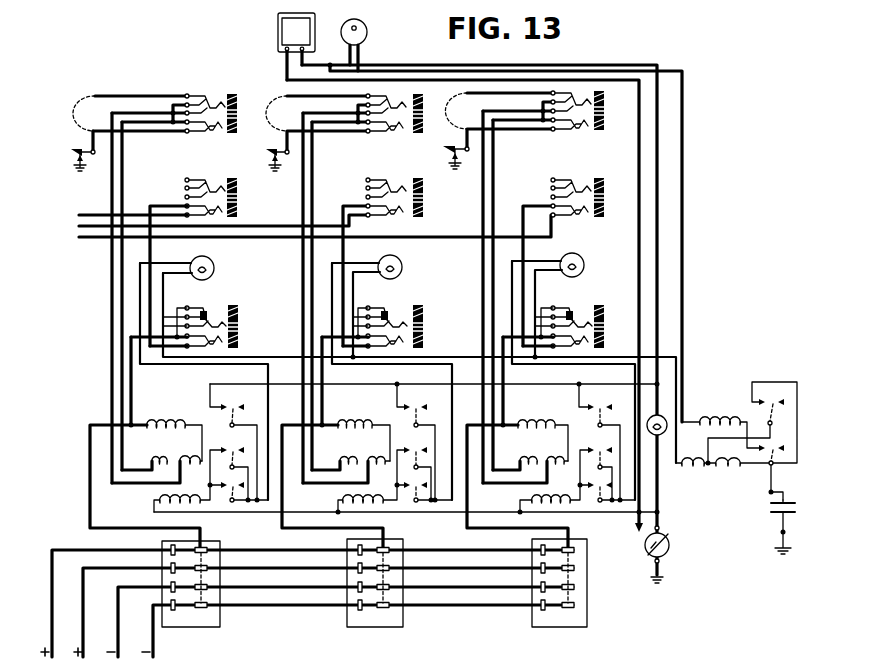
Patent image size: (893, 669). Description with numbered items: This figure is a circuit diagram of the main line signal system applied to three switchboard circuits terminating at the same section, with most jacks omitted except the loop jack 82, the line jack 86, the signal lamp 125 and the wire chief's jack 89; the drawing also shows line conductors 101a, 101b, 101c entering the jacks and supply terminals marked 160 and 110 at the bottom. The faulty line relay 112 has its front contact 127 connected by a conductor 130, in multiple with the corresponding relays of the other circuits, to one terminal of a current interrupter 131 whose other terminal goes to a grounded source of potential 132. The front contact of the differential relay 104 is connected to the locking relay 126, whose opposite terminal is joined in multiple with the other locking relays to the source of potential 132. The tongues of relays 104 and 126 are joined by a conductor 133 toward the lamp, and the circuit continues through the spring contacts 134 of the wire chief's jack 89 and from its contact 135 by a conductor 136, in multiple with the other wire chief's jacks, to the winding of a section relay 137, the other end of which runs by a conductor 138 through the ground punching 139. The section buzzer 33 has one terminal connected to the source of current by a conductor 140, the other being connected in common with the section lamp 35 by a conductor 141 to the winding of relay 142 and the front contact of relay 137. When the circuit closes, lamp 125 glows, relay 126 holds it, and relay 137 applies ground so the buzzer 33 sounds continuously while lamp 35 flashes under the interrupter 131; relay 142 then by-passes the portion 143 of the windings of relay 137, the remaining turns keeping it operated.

The section buzzer 33 is at (278, 31).
The section lamp 35 is at (367, 32).
The loop jack 82 is at (172, 107).
The line jack 86 is at (228, 197).
The wire chief's jack 89 is at (207, 318).
The line conductor 101a is at (112, 276).
The line conductor 101b is at (203, 276).
The line conductor 101c is at (295, 276).
The differential relay 104 is at (174, 460).
The faulty line relay 112 is at (162, 423).
The signal lamp 125 is at (214, 268).
The locking relay 126 is at (159, 496).
The front contact 127 is at (226, 409).
The conductor 130 is at (360, 374).
The current interrupter 131 is at (658, 415).
The source of potential 132 is at (669, 539).
The conductor 133 is at (265, 408).
The spring contacts 134 is at (196, 311).
The contact 135 is at (205, 311).
The conductor 136 is at (279, 360).
The section relay 137 is at (707, 468).
The conductor 138 is at (771, 478).
The ground punching 139 is at (793, 506).
The conductor 140 is at (637, 242).
The conductor 141 is at (683, 248).
The relay 142 is at (657, 253).
The portion of the windings 143 is at (730, 465).
The supply voltage terminal 160 is at (87, 666).
The supply voltage terminal 110 is at (121, 666).